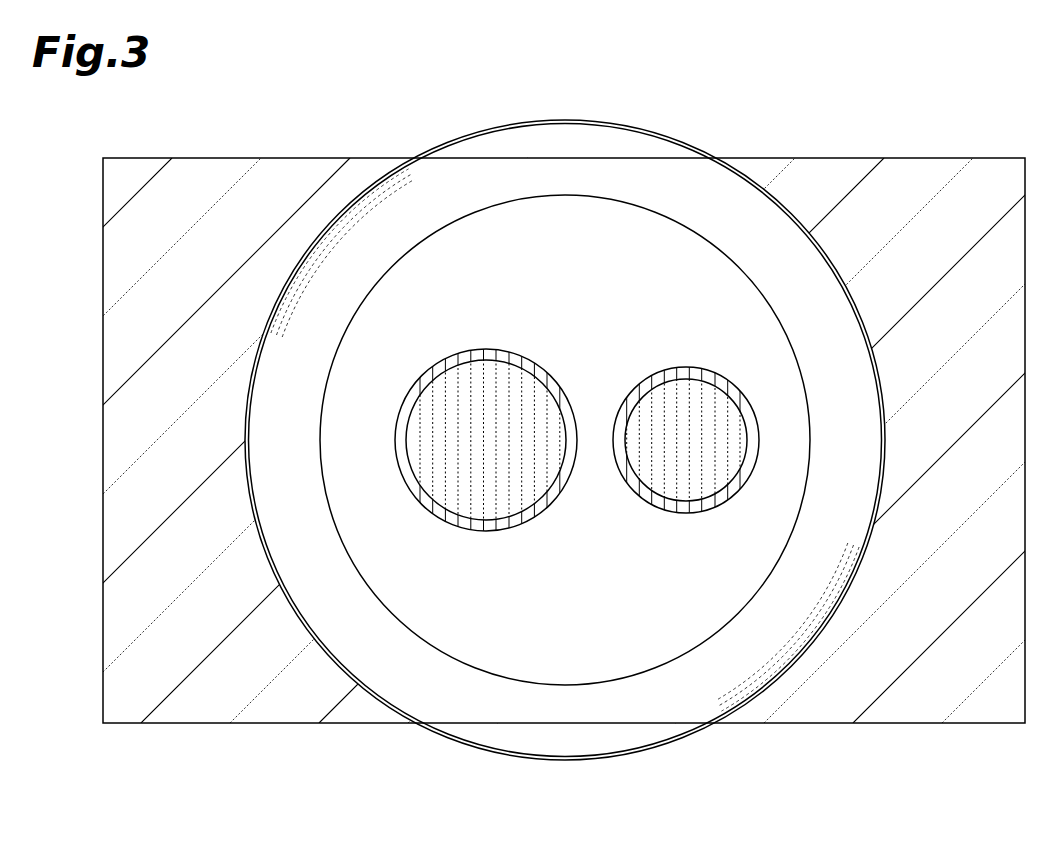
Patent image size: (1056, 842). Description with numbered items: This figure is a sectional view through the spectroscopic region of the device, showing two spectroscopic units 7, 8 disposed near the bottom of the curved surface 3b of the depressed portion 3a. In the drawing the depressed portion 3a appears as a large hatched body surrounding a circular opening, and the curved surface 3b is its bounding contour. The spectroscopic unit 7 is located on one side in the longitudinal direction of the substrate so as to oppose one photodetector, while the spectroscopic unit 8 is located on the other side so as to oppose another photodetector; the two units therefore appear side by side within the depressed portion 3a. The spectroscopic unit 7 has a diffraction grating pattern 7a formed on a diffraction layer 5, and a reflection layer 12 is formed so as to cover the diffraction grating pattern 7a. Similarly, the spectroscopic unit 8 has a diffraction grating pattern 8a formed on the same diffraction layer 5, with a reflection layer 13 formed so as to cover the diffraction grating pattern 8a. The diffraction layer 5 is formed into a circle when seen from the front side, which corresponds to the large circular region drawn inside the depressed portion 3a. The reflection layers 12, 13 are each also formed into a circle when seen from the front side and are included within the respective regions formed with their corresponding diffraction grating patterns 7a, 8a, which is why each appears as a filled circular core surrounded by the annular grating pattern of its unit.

The depressed portion 3a is at (317, 585).
The curved surface 3b is at (760, 230).
The diffraction layer 5 is at (583, 625).
The spectroscopic unit 7 is at (486, 452).
The diffraction grating pattern 7a is at (540, 510).
The spectroscopic unit 8 is at (680, 452).
The diffraction grating pattern 8a is at (627, 477).
The reflection layer 12 is at (440, 477).
The reflection layer 13 is at (728, 485).